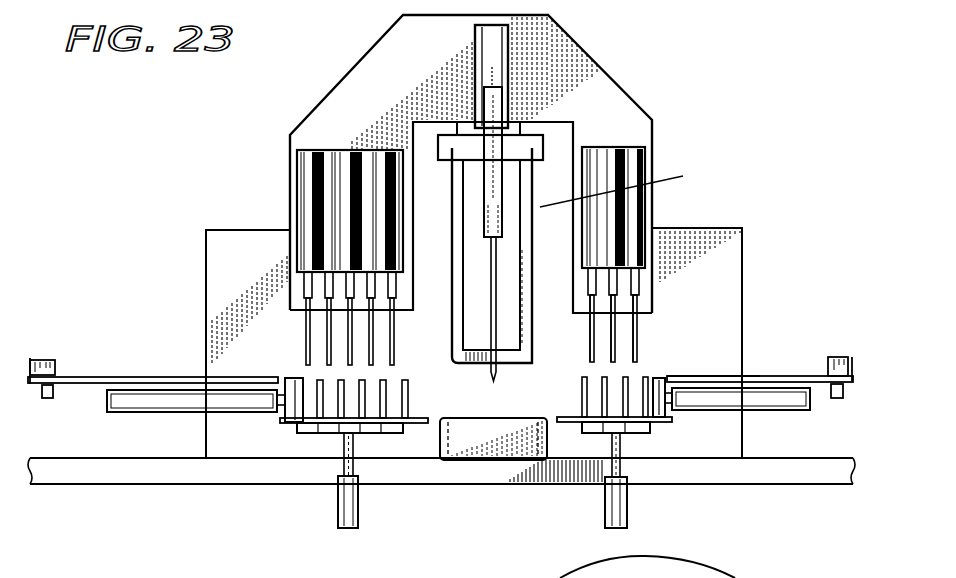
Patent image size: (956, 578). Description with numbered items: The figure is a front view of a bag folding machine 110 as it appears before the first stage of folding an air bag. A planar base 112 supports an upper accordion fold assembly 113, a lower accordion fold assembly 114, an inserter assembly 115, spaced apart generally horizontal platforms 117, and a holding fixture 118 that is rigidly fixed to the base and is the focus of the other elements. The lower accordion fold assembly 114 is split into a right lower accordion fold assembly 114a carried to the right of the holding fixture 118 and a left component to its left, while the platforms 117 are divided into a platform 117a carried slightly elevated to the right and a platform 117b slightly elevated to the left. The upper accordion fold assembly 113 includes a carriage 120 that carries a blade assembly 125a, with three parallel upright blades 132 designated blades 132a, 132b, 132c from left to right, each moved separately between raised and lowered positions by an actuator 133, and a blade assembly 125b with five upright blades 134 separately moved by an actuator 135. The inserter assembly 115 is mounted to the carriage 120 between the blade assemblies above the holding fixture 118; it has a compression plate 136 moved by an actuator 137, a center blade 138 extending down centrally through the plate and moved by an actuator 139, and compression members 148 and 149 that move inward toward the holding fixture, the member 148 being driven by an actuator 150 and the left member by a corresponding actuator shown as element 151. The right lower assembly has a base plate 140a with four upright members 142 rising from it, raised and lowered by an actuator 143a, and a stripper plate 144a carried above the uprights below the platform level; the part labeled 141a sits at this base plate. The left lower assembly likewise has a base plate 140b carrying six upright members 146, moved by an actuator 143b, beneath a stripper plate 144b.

The bag folding machine 110 is at (670, 121).
The planar base 112 is at (738, 472).
The upper accordion fold assembly 113 is at (618, 68).
The lower accordion fold assembly 114 is at (395, 436).
The right lower accordion fold assembly 114a is at (642, 440).
The inserter assembly 115 is at (536, 208).
The platform 117 is at (803, 372).
The platform 117a is at (767, 375).
The platform 117b is at (144, 377).
The holding fixture 118 is at (503, 450).
The carriage 120 is at (357, 62).
The blade assembly 125a is at (635, 217).
The blade assembly 125b is at (305, 196).
The upright blades 132 is at (640, 333).
The upright blade 132a is at (593, 332).
The upright blade 132b is at (607, 361).
The upright blade 132c is at (639, 350).
The actuator 133 is at (642, 170).
The upright blades 134 is at (306, 332).
The actuator 135 is at (385, 147).
The compression plate 136 is at (453, 313).
The actuator 137 is at (481, 51).
The center blade 138 is at (498, 262).
The actuator 139 is at (482, 196).
The base plate 140a is at (582, 425).
The base plate 140b is at (325, 435).
The holder 141a is at (307, 433).
The upright members 142 is at (580, 391).
The actuator 143a is at (607, 500).
The actuator 143b is at (340, 512).
The stripper plate 144a is at (641, 433).
The stripper plate 144b is at (428, 412).
The upright members 146 is at (407, 402).
The compression member 148 is at (660, 377).
The compression member 149 is at (291, 378).
The actuator 150 is at (790, 402).
The cylinder 151 is at (186, 400).